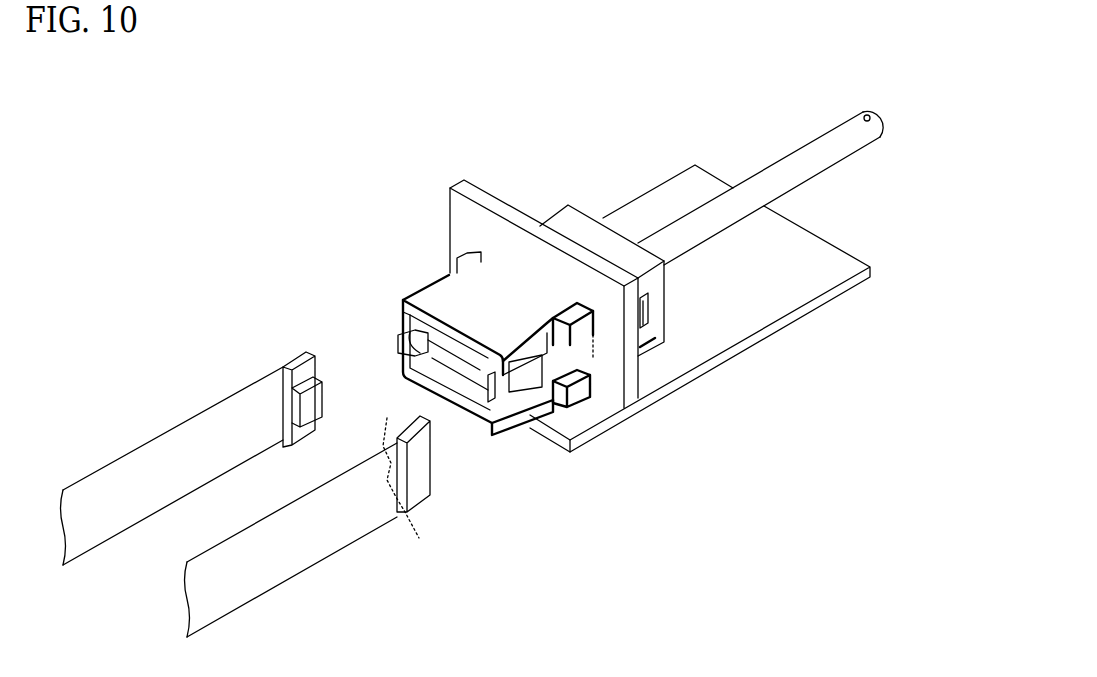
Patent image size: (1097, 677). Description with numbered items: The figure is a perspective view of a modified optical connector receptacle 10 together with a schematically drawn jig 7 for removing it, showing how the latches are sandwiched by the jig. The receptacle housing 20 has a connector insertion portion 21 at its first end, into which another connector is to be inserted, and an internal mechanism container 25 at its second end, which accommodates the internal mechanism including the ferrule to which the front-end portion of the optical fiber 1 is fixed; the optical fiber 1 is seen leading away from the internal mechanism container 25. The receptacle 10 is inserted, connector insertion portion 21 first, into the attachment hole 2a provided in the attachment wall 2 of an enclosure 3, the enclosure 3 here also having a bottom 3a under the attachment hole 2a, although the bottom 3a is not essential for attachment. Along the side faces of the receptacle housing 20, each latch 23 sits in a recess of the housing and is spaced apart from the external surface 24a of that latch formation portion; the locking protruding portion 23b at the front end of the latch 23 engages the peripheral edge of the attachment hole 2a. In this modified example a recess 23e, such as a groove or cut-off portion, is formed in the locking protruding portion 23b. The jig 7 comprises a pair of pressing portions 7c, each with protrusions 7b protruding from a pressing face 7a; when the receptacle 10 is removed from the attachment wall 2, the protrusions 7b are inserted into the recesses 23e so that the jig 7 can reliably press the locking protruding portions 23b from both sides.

The optical fiber 1 is at (836, 123).
The attachment wall 2 is at (458, 225).
The attachment hole 2a is at (511, 279).
The enclosure 3 is at (828, 326).
The bottom 3a is at (746, 347).
The jig 7 is at (47, 567).
The pressing face 7a is at (301, 368).
The protrusion 7b is at (320, 403).
The pressing portion 7c is at (304, 350).
The optical connector receptacle 10 is at (539, 220).
The receptacle housing 20 is at (652, 333).
The connector insertion portion 21 is at (405, 312).
The latch 23 is at (560, 408).
The locking protruding portion 23b is at (450, 251).
The recess 23e is at (598, 360).
The external surface 24a is at (528, 398).
The internal mechanism container 25 is at (586, 230).